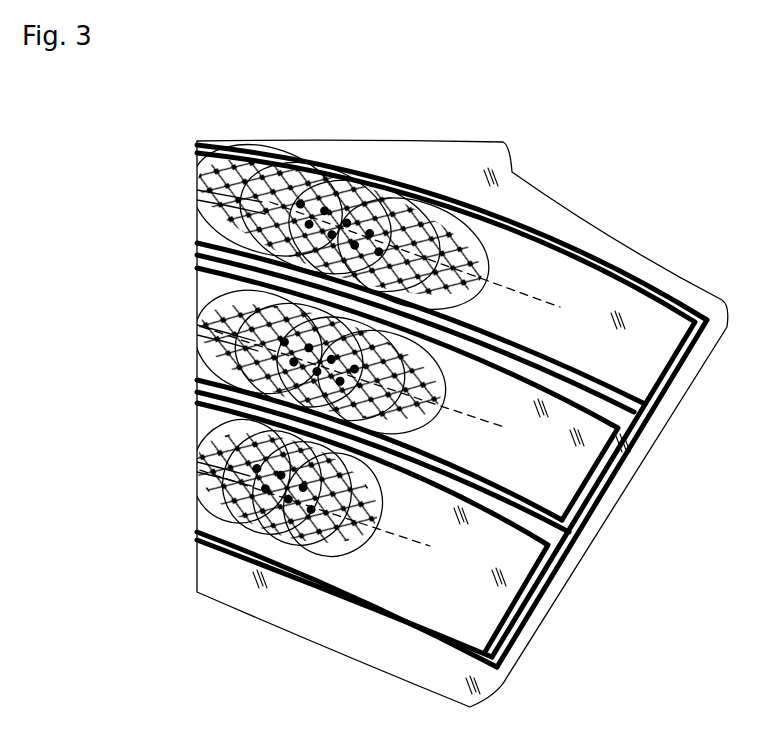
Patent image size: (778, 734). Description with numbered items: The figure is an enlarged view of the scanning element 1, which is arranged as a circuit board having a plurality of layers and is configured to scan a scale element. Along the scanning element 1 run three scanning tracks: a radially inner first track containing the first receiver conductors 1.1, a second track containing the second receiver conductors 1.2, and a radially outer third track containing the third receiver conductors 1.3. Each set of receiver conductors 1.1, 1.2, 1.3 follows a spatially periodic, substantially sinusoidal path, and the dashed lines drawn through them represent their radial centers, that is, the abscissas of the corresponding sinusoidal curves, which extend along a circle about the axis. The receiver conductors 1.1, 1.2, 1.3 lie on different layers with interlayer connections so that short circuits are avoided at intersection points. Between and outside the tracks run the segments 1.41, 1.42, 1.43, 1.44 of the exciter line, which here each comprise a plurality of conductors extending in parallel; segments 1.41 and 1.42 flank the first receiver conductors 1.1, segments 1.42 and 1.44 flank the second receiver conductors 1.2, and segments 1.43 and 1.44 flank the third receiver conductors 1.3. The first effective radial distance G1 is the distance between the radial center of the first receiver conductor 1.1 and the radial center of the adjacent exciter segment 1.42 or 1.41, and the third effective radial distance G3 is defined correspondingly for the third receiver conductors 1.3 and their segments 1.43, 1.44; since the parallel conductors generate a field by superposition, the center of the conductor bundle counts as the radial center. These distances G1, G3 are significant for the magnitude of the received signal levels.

The scanning element 1 is at (193, 153).
The first receiver conductors 1.1 is at (357, 548).
The second receiver conductors 1.2 is at (423, 422).
The third receiver conductors 1.3 is at (493, 277).
The segment of the exciter line 1.41 is at (197, 532).
The segment of the exciter line 1.42 is at (197, 388).
The segment of the exciter line 1.43 is at (443, 192).
The segment of the exciter line 1.44 is at (197, 253).
The first effective radial distance G1 is at (402, 457).
The third effective radial distance G3 is at (495, 276).